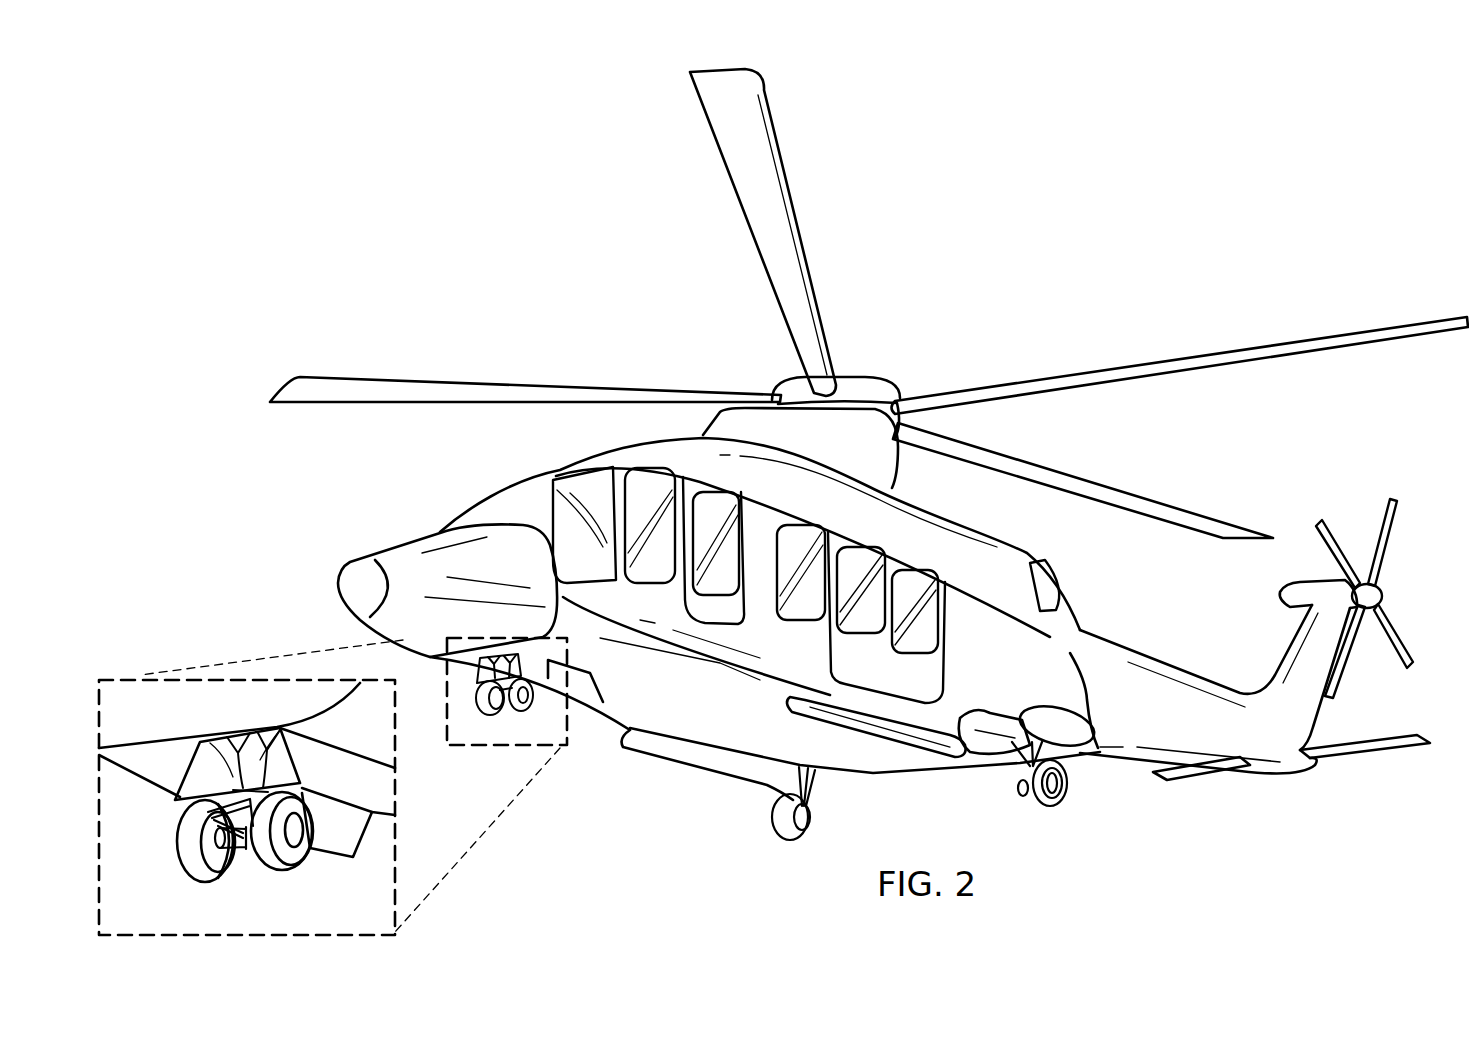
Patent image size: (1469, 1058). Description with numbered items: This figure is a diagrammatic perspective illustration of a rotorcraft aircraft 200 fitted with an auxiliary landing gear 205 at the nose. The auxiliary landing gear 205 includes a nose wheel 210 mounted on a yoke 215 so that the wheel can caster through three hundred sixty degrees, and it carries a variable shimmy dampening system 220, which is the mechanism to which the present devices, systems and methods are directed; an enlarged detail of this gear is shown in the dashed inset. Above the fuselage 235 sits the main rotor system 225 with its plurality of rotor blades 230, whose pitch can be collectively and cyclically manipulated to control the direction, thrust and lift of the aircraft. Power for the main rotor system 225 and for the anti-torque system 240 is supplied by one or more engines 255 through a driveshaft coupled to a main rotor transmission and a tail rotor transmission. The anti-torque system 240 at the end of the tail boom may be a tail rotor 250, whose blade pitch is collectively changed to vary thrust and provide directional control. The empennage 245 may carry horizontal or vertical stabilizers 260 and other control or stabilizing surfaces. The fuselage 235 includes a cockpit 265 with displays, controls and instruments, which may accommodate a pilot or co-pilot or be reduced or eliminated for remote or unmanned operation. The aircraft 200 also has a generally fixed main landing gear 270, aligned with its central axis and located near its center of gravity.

The aircraft 200 is at (530, 122).
The auxiliary landing gear 205 is at (482, 738).
The nose wheel 210 is at (305, 868).
The yoke 215 is at (238, 868).
The variable shimmy dampening system 220 is at (200, 778).
The main rotor system 225 is at (890, 351).
The rotor blades 230 is at (543, 383).
The fuselage 235 is at (605, 712).
The anti-torque system 240 is at (1247, 605).
The empennage 245 is at (1128, 752).
The tail rotor 250 is at (1405, 590).
The engine 255 is at (1050, 545).
The fuselage 260 is at (1207, 782).
The cockpit 265 is at (468, 480).
The main landing gear 270 is at (765, 855).